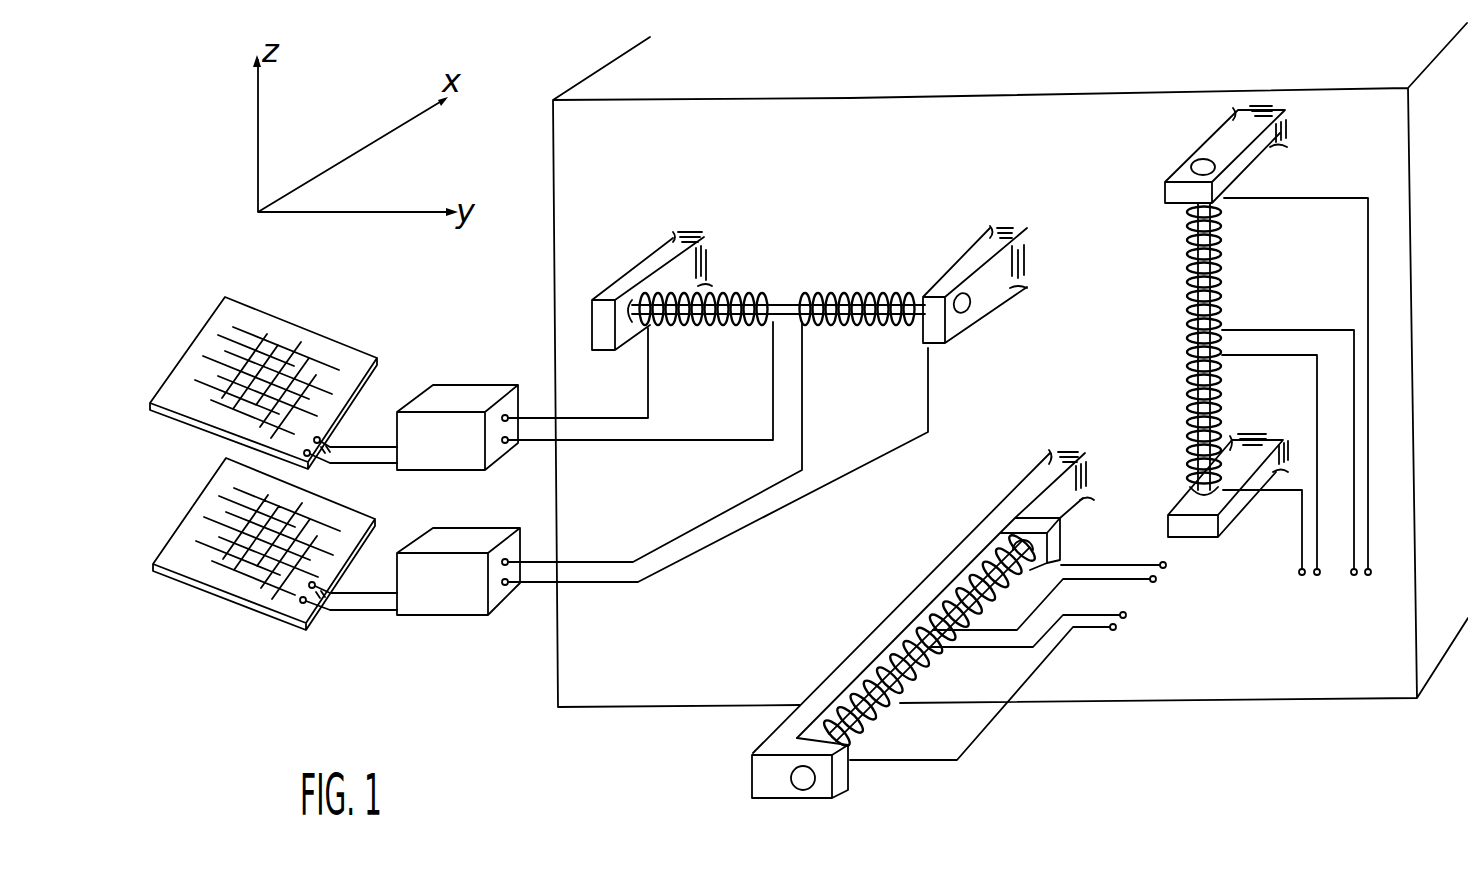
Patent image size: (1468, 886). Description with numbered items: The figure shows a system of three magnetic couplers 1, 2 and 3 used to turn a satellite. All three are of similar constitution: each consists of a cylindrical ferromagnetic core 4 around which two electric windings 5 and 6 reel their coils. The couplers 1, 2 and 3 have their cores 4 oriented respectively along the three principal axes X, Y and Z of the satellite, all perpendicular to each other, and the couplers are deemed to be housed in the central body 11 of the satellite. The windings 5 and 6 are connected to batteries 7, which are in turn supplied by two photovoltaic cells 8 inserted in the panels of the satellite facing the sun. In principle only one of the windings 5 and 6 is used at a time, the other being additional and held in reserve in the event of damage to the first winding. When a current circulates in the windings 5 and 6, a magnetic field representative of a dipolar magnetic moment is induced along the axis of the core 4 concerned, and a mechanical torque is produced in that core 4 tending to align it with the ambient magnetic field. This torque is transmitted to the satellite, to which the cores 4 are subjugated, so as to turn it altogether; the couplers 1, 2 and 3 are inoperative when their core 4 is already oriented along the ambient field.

The magnetic coupler 1 is at (837, 658).
The magnetic coupler 2 is at (767, 350).
The magnetic coupler 3 is at (1165, 237).
The cylindrical ferromagnetic core 4 is at (788, 303).
The electric winding 5 is at (898, 290).
The electric winding 6 is at (745, 287).
The battery 7 is at (450, 395).
The photovoltaic cell 8 is at (312, 347).
The central body 11 is at (1237, 690).